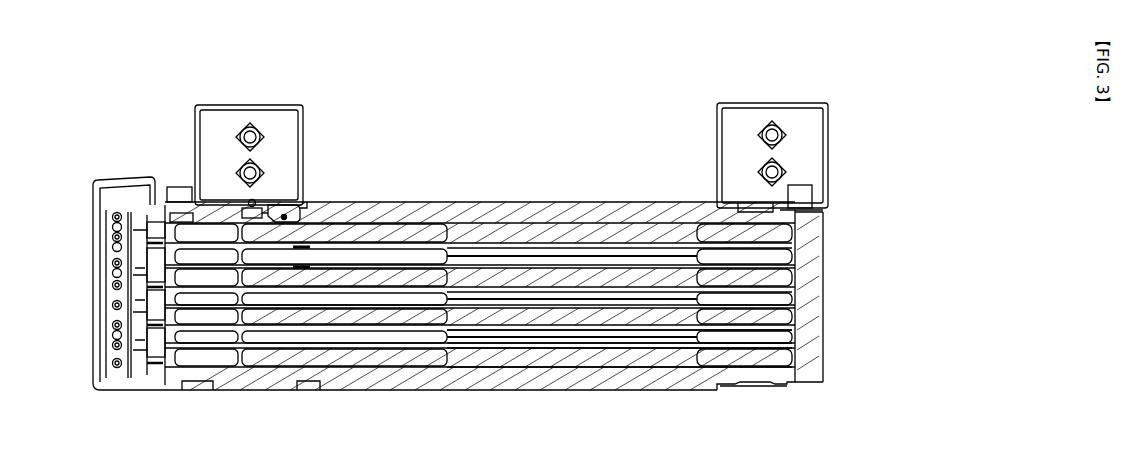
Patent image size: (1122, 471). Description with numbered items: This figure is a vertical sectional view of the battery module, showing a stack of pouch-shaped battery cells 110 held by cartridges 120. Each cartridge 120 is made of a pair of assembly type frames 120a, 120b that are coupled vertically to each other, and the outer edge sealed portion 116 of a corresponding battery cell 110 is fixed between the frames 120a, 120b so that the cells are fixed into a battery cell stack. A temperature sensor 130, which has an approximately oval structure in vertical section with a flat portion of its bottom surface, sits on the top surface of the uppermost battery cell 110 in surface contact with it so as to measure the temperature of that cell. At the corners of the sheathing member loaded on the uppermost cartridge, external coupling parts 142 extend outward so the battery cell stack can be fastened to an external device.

The battery cell 110 is at (257, 238).
The outer edge sealed portion 116 is at (818, 308).
The cartridge 120 is at (950, 349).
The assembly type frame 120a is at (818, 330).
The assembly type frame 120b is at (818, 352).
The temperature sensor 130 is at (283, 217).
The external coupling part 142 is at (813, 142).